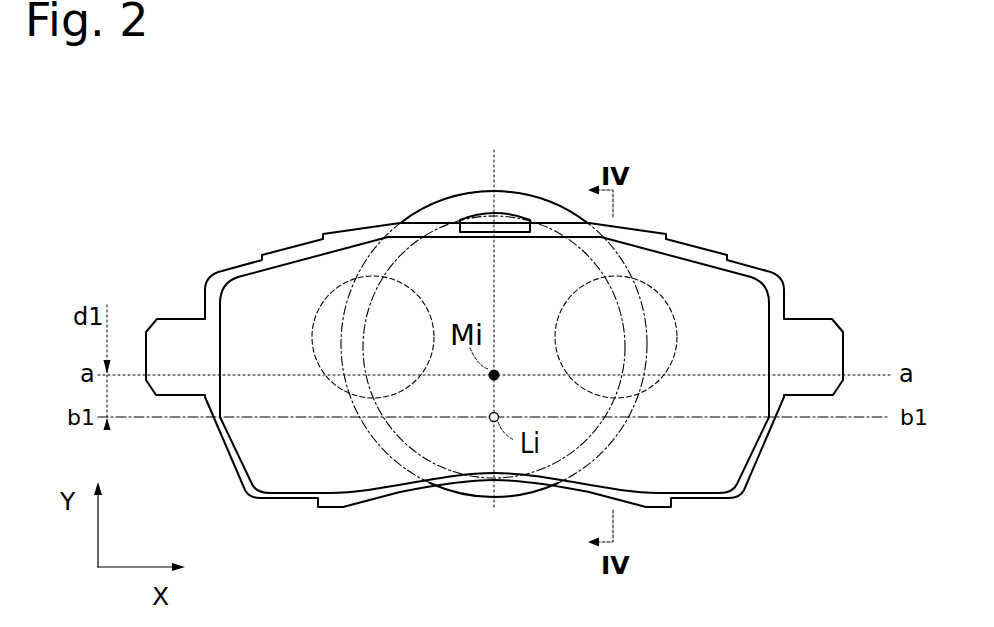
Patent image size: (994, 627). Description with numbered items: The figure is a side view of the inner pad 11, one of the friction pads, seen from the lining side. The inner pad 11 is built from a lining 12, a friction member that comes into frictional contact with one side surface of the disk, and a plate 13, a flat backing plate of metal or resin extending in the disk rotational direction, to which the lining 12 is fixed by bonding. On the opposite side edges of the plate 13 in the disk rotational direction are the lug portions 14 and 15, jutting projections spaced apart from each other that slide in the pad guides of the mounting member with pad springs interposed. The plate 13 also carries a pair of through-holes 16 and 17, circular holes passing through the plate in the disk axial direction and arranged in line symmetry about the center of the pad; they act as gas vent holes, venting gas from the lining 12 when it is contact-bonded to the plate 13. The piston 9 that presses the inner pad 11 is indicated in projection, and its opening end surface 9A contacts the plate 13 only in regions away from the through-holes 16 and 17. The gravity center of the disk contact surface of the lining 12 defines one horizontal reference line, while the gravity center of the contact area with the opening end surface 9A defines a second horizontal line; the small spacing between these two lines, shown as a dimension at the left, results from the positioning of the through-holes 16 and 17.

The piston 9 is at (548, 200).
The opening end surface of the piston 9A is at (462, 207).
The inner pad 11 is at (260, 219).
The lining 12 is at (733, 308).
The plate 13 is at (380, 230).
The lug portion 14 is at (170, 330).
The lug portion 15 is at (820, 327).
The through-hole 16 is at (337, 243).
The through-hole 17 is at (663, 300).